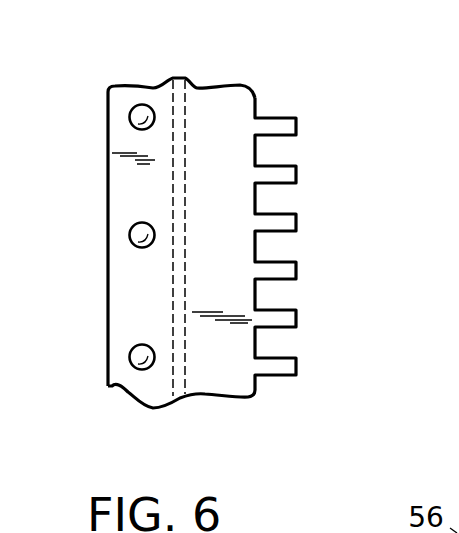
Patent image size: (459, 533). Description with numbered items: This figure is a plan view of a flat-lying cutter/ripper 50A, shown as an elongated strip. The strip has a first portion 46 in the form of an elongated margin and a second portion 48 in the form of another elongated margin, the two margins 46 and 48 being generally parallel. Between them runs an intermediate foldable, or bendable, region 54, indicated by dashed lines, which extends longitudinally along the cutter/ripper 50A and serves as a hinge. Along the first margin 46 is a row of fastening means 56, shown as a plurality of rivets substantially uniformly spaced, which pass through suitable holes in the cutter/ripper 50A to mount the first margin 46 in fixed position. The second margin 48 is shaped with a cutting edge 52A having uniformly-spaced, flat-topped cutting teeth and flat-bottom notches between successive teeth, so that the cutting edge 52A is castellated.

The cutter/ripper 50A is at (228, 231).
The cutting edge 52A is at (302, 248).
The intermediate foldable region 54 is at (187, 117).
The first portion 46 is at (128, 188).
The second portion 48 is at (218, 373).
The fastening means 56 is at (133, 116).